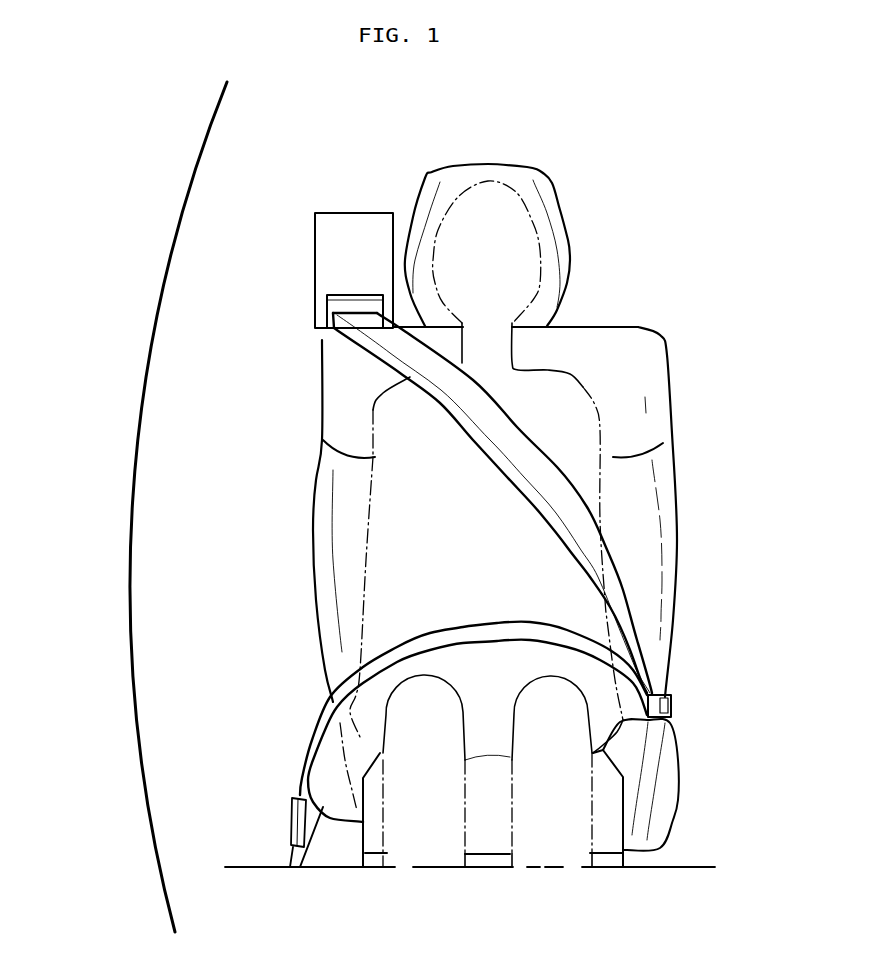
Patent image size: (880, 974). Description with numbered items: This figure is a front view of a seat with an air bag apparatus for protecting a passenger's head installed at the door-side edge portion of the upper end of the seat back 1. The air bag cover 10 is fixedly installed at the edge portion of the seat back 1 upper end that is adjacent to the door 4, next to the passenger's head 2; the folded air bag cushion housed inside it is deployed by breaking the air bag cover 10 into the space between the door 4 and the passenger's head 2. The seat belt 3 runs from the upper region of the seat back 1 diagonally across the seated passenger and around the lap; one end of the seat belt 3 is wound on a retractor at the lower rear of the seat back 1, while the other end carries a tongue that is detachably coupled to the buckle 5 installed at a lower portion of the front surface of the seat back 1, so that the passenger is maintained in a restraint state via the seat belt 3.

The seat back 1 is at (653, 597).
The passenger's head 2 is at (543, 272).
The seat belt 3 is at (600, 520).
The door 4 is at (130, 583).
The buckle 5 is at (672, 706).
The air bag cover 10 is at (362, 225).